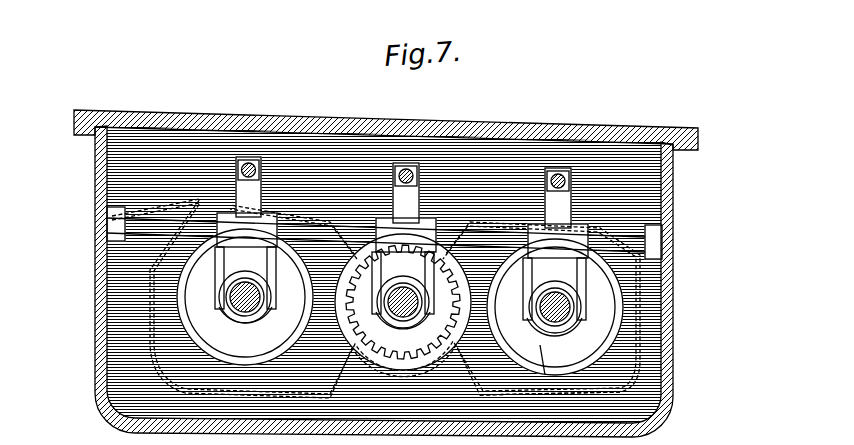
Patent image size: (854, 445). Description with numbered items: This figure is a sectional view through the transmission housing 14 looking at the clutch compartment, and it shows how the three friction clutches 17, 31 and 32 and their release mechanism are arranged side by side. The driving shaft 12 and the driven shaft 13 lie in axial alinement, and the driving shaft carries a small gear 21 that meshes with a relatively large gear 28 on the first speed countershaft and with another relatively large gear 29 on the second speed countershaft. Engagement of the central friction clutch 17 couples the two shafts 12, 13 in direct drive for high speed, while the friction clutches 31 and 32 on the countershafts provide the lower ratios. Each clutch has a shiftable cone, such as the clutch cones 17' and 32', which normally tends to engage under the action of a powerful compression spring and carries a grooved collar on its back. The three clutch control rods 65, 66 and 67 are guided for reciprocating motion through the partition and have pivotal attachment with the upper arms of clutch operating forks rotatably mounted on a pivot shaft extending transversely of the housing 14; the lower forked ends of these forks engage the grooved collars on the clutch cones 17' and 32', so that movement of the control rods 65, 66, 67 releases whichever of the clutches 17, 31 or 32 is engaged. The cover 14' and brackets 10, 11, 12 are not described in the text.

The transmission housing 14 is at (357, 281).
The casing cover 14' is at (386, 120).
The driven shaft 13 is at (630, 248).
The bracket 10 is at (263, 200).
The bracket 11 is at (412, 218).
The driving shaft 12 is at (571, 210).
The clutch control rod 65 is at (260, 173).
The clutch control rod 66 is at (417, 176).
The clutch control rod 67 is at (571, 183).
The friction clutch 17 is at (290, 333).
The clutch cone 17' is at (403, 337).
The small gear 21 is at (403, 319).
The large gear 28 is at (376, 302).
The large gear 29 is at (550, 407).
The friction clutch 31 is at (205, 326).
The friction clutch 32 is at (521, 343).
The clutch cone 32' is at (537, 370).